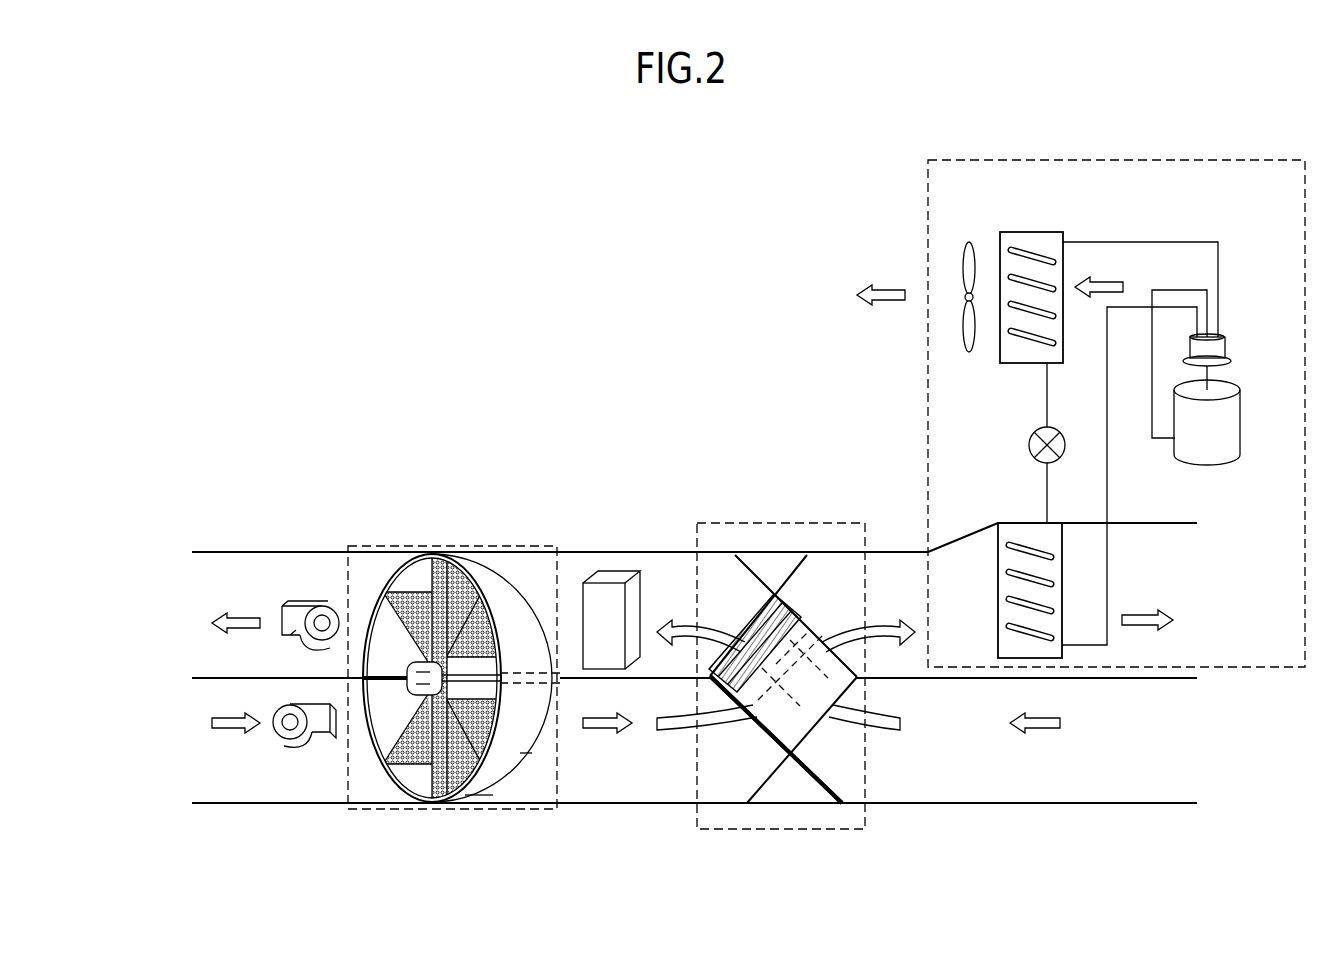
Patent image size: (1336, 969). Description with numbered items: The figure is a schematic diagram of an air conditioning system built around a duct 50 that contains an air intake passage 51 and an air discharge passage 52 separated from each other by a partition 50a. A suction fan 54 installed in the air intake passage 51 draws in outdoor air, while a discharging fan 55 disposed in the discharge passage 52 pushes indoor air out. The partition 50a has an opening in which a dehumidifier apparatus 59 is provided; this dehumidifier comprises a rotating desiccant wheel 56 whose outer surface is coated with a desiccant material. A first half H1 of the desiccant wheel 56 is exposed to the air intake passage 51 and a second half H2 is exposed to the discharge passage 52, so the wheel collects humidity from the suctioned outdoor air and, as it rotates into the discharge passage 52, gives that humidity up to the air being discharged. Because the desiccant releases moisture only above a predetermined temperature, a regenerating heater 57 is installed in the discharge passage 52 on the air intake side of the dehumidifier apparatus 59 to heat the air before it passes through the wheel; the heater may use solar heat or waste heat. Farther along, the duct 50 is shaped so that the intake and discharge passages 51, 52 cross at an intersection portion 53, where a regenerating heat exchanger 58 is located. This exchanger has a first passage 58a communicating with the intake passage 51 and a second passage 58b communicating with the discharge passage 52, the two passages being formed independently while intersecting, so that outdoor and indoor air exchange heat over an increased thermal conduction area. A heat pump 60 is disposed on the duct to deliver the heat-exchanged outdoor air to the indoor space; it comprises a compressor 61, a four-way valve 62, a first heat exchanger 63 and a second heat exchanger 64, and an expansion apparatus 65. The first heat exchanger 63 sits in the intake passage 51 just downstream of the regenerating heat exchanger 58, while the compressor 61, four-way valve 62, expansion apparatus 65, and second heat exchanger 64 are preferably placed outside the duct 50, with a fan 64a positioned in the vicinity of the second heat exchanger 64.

The duct 50 is at (220, 548).
The partition 50a is at (218, 677).
The air intake passage 51 is at (243, 770).
The air discharge passage 52 is at (256, 585).
The intersection portion 53 is at (780, 830).
The suction fan 54 is at (302, 747).
The discharging fan 55 is at (312, 610).
The desiccant wheel 56 is at (490, 782).
The regenerating heater 57 is at (612, 578).
The regenerating heat exchanger 58 is at (798, 724).
The first passage 58a is at (757, 722).
The second passage 58b is at (752, 642).
The dehumidifier apparatus 59 is at (526, 774).
The heat pump 60 is at (1137, 160).
The compressor 61 is at (1240, 438).
The four-way valve 62 is at (1224, 345).
The first heat exchanger 63 is at (998, 568).
The second heat exchanger 64 is at (1026, 232).
The fan 64a is at (969, 352).
The expansion apparatus 65 is at (1032, 452).
The first half H1 is at (380, 810).
The second half H2 is at (383, 546).